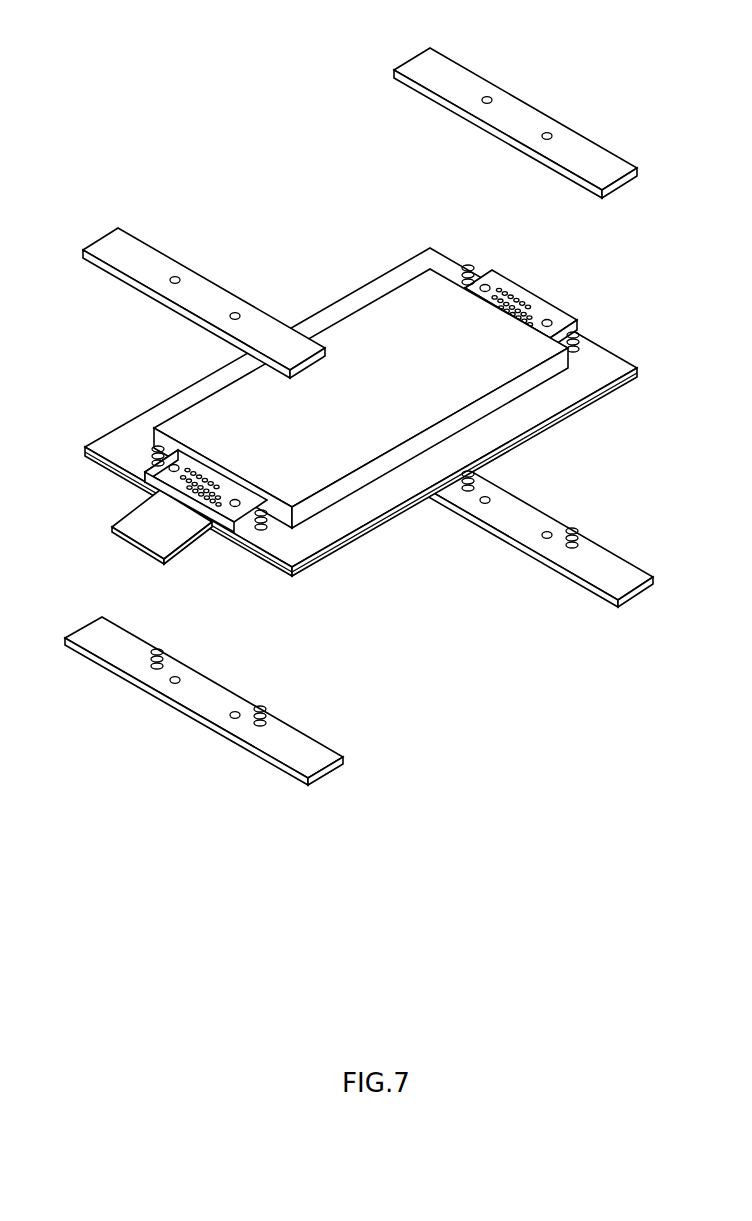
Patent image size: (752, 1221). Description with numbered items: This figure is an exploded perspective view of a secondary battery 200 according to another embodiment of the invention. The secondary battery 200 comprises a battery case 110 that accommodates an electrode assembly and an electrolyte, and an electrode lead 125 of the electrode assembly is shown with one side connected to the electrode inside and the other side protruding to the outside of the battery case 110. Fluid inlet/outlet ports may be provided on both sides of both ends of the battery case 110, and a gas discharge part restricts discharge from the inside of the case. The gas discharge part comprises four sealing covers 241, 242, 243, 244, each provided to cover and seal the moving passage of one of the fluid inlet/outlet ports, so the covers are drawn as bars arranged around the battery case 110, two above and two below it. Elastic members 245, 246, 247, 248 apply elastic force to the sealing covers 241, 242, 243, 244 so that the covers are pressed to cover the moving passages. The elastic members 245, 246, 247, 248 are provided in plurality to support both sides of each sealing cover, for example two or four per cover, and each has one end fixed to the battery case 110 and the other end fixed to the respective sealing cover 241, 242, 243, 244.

The secondary battery 200 is at (68, 60).
The battery case 110 is at (597, 413).
The electrode lead 125 is at (140, 533).
The sealing cover 241 is at (142, 258).
The sealing cover 242 is at (298, 748).
The sealing cover 243 is at (453, 78).
The sealing cover 244 is at (610, 568).
The elastic member 245 is at (152, 452).
The elastic member 246 is at (162, 650).
The elastic member 247 is at (467, 270).
The elastic member 248 is at (477, 470).